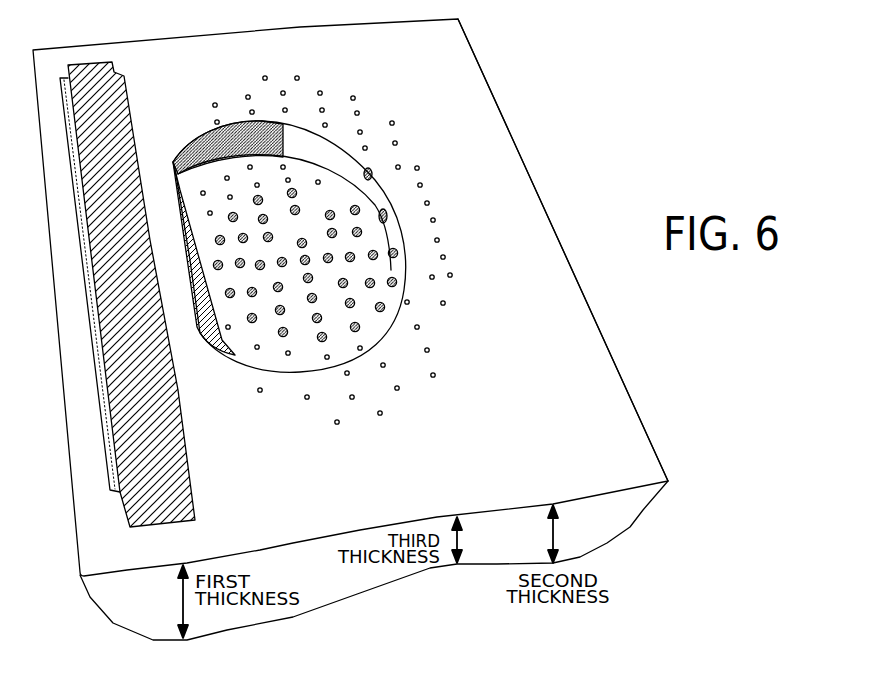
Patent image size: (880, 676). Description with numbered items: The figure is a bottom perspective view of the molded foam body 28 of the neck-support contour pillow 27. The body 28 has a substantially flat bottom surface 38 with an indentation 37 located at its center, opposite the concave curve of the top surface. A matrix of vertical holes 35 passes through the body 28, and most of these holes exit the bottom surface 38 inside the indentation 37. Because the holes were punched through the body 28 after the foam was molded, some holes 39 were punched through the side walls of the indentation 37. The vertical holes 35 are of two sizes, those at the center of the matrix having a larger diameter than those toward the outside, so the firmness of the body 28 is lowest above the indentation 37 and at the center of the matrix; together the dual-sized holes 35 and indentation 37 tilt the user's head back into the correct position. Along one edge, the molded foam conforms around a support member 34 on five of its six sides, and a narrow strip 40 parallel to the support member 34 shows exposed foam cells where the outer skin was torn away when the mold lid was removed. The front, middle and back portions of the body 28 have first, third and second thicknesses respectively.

The neck-support contour pillow 27 is at (351, 327).
The body 28 is at (527, 167).
The support member 34 is at (127, 294).
The vertical holes 35 is at (279, 395).
The indentation 37 is at (305, 246).
The bottom surface 38 is at (502, 428).
The holes 39 is at (381, 213).
The narrow strip 40 is at (90, 293).